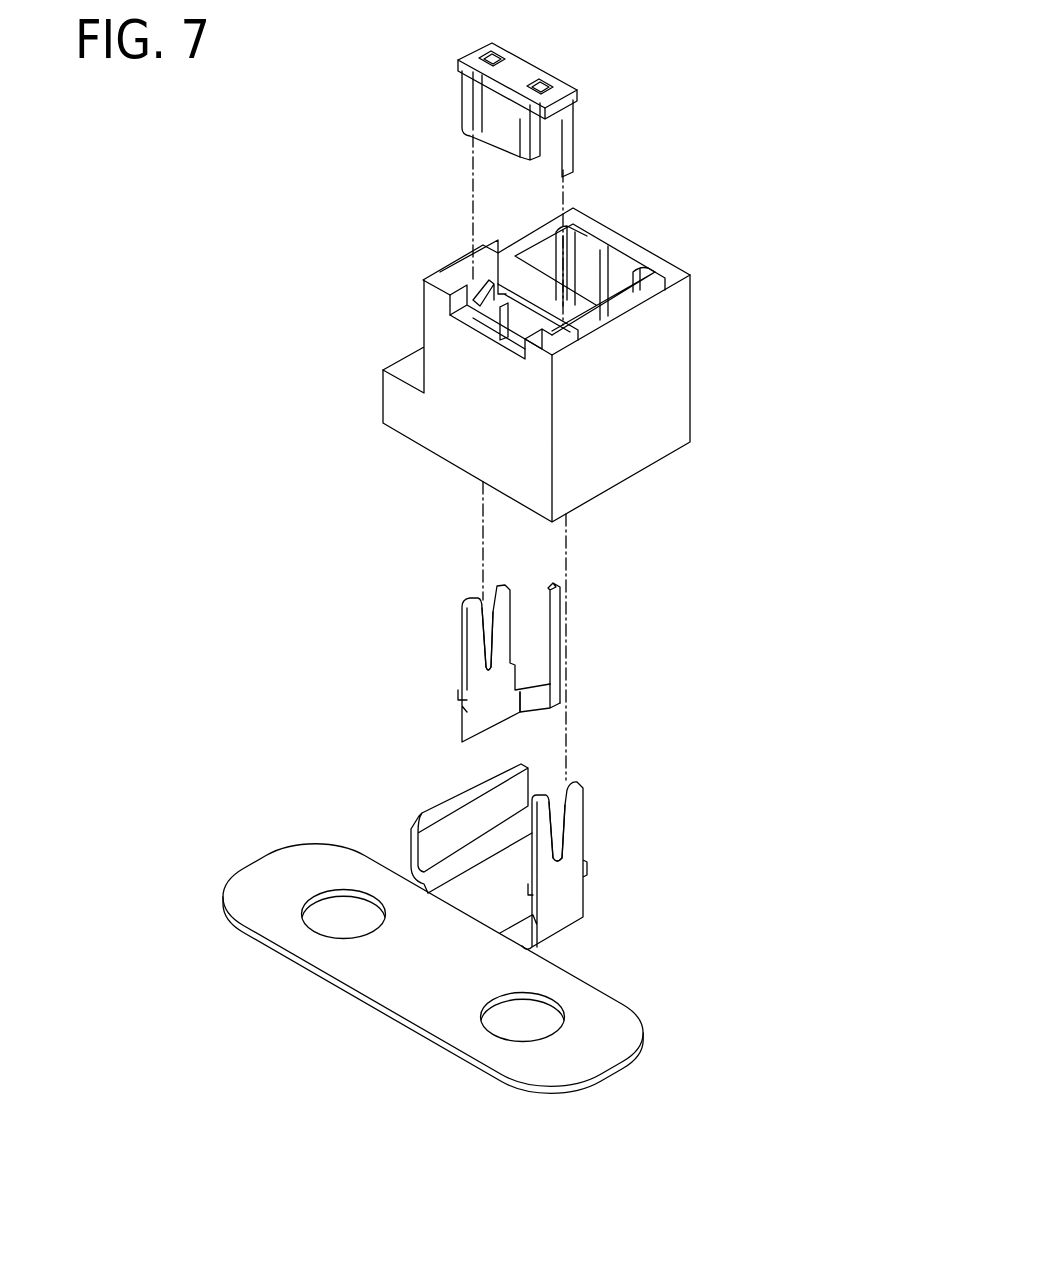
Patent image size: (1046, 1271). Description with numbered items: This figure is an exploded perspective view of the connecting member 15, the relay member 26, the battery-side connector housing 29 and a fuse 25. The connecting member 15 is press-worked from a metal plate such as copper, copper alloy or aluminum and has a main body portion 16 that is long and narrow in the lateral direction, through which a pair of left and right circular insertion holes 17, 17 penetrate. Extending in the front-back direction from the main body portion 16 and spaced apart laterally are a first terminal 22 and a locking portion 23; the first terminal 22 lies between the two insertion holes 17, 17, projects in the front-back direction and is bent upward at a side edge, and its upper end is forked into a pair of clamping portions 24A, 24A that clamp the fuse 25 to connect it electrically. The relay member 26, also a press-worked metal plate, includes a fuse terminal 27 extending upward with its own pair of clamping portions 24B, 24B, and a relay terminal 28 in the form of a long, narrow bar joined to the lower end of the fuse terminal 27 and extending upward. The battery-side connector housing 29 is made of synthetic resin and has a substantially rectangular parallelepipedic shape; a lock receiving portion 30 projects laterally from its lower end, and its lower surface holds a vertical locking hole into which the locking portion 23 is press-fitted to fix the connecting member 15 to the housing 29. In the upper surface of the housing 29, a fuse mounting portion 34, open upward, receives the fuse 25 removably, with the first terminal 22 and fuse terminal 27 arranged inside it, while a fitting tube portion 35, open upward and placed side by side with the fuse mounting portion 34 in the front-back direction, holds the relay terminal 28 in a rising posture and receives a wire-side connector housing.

The connecting member 15 is at (452, 943).
The main body portion 16 is at (413, 1003).
The insertion hole 17 is at (517, 993).
The first terminal 22 is at (570, 893).
The locking portion 23 is at (452, 830).
The clamping portion 24A is at (550, 810).
The clamping portion 24B is at (497, 597).
The fuse 25 is at (522, 66).
The relay member 26 is at (537, 710).
The fuse terminal 27 is at (498, 627).
The relay terminal 28 is at (553, 621).
The battery-side connector housing 29 is at (541, 344).
The lock receiving portion 30 is at (402, 370).
The fuse mounting portion 34 is at (467, 284).
The fitting tube portion 35 is at (585, 246).